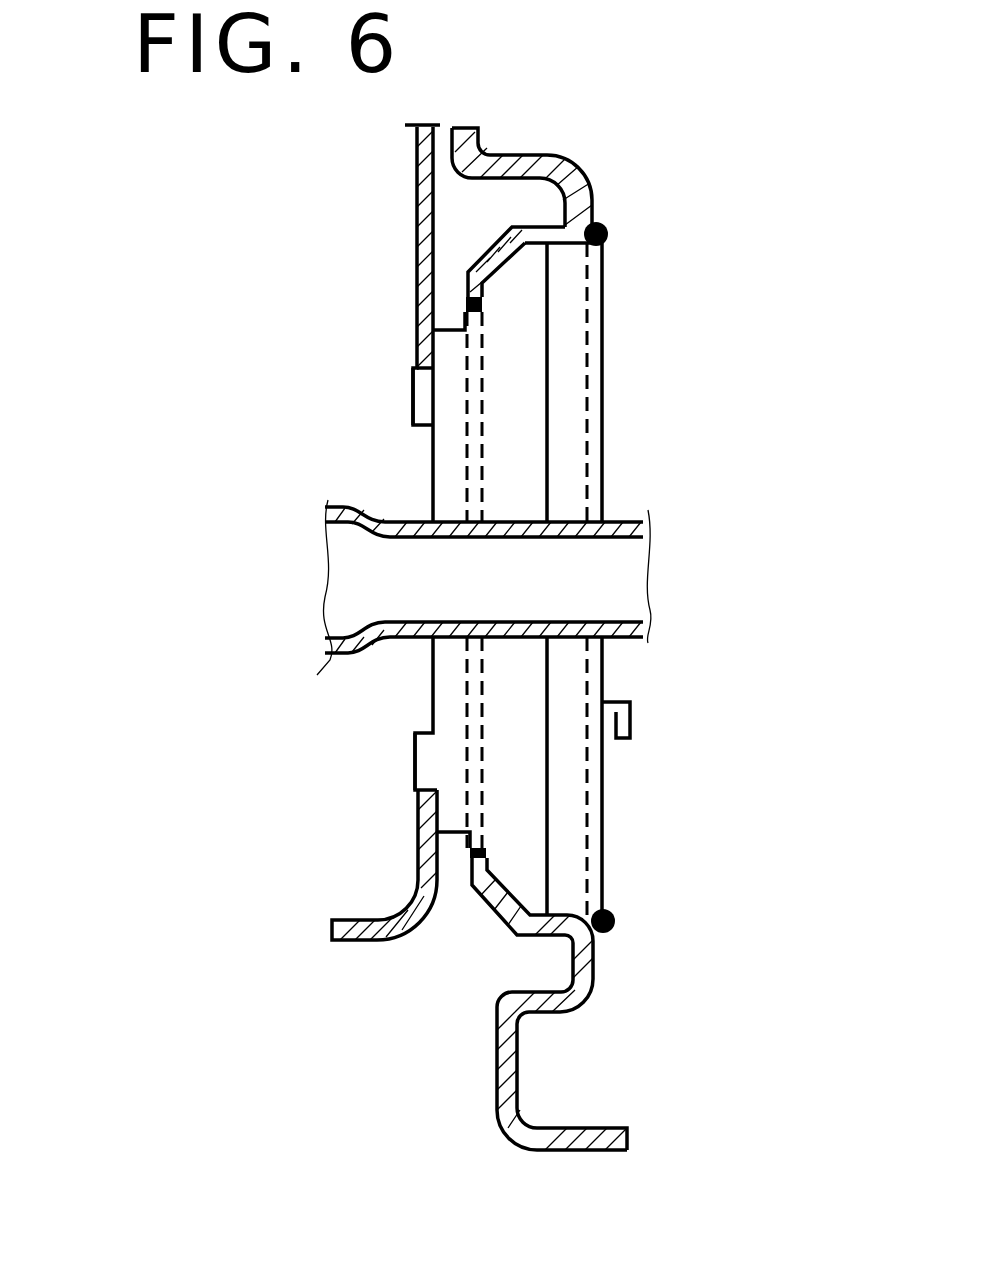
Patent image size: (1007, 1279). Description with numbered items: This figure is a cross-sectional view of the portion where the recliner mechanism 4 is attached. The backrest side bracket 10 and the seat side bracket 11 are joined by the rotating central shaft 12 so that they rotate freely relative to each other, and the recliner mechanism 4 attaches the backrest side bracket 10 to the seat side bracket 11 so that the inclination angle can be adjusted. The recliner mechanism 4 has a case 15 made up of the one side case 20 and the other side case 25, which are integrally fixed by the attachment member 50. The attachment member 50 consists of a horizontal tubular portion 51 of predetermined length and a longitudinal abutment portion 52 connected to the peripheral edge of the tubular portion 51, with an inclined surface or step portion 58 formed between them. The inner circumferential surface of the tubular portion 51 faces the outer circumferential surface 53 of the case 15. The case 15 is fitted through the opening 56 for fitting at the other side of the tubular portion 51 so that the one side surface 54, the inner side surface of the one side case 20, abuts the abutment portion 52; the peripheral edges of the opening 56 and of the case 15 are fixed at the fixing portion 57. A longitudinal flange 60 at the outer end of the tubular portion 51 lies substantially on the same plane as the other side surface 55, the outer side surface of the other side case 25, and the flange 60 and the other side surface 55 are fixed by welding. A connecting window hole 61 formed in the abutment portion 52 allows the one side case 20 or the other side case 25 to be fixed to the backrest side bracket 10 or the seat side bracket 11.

The recliner mechanism 4 is at (626, 382).
The backrest side bracket 10 is at (418, 847).
The seat side bracket 11 is at (565, 1123).
The rotating central shaft 12 is at (385, 640).
The case 15 is at (626, 382).
The one side case 20 is at (433, 478).
The other side case 25 is at (603, 482).
The attachment member 50 is at (584, 579).
The tubular portion 51 is at (584, 596).
The abutment portion 52 is at (466, 300).
The outer circumferential surface 53 is at (560, 260).
The one side surface 54 is at (528, 598).
The other side surface 55 is at (604, 360).
The opening for fitting 56 is at (585, 393).
The fixing portion 57 is at (610, 236).
The step portion 58 is at (483, 263).
The flange 60 is at (587, 197).
The connecting window hole 61 is at (487, 703).